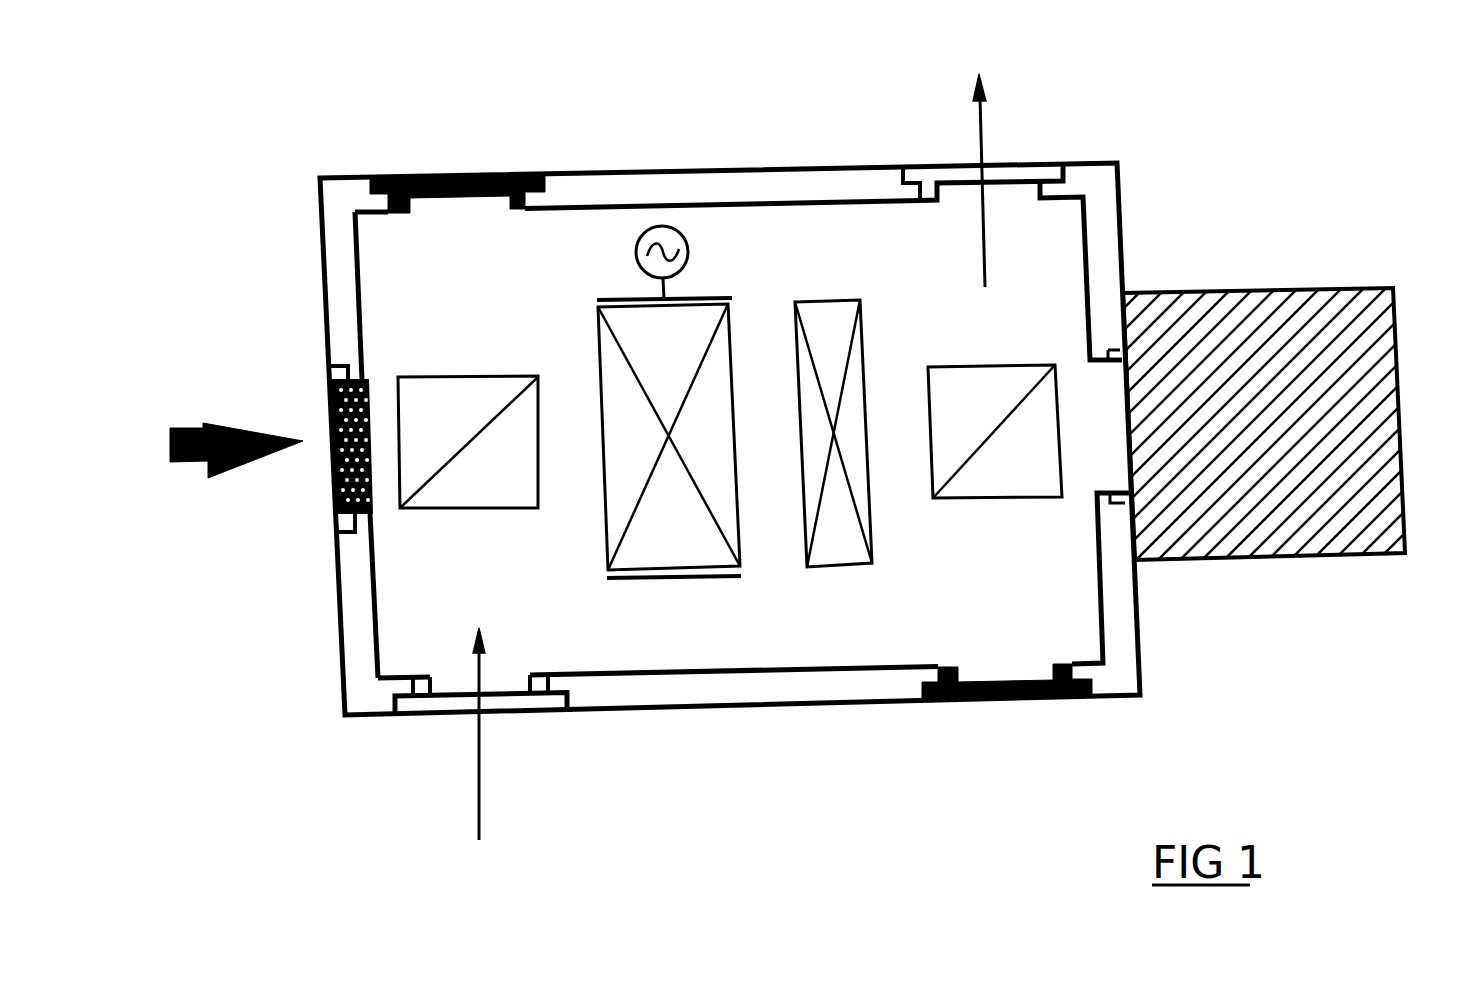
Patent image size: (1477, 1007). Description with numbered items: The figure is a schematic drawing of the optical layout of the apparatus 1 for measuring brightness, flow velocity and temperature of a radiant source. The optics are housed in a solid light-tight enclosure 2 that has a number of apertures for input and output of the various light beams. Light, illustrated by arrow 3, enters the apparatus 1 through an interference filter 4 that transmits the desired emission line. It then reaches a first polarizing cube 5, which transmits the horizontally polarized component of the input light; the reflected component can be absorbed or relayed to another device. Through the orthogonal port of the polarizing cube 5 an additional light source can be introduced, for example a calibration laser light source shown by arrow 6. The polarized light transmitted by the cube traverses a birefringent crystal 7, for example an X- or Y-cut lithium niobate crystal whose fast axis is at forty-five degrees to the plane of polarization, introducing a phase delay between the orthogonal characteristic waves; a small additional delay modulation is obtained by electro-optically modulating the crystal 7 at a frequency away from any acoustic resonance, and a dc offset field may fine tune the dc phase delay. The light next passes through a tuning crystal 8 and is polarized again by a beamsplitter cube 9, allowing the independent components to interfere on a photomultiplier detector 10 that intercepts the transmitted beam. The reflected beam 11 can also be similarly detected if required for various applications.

The apparatus 1 is at (691, 782).
The light-tight enclosure 2 is at (683, 187).
The input light 3 is at (172, 436).
The interference filter 4 is at (332, 420).
The first polarizing cube 5 is at (505, 490).
The calibration laser light source 6 is at (476, 792).
The birefringent crystal 7 is at (678, 548).
The tuning crystal 8 is at (853, 558).
The beamsplitter cube 9 is at (943, 363).
The photomultiplier detector 10 is at (1397, 310).
The reflected beam 11 is at (983, 120).